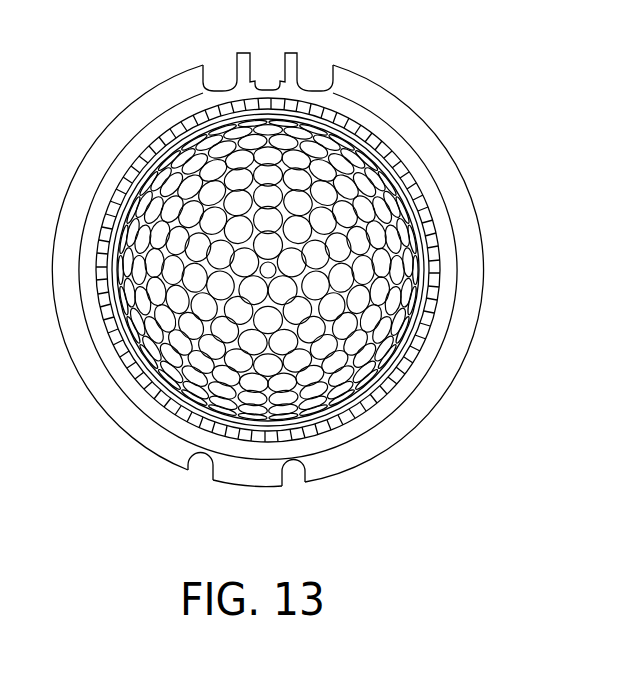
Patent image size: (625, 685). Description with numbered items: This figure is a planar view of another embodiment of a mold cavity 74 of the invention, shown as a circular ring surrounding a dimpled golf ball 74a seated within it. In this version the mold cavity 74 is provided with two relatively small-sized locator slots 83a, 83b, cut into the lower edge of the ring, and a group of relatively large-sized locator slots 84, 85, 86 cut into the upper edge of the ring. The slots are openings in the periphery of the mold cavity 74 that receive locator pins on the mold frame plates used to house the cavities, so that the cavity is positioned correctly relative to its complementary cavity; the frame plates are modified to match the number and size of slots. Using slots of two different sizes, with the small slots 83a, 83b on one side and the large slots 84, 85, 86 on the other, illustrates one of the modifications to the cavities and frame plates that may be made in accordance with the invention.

The mold cavity 74 is at (420, 92).
The golf ball 74a is at (330, 190).
The larger-sized locator slot 84 is at (222, 72).
The larger-sized locator slot 85 is at (265, 65).
The larger-sized locator slot 86 is at (312, 72).
The smaller-sized locator slot 83a is at (202, 468).
The smaller-sized locator slot 83b is at (292, 480).